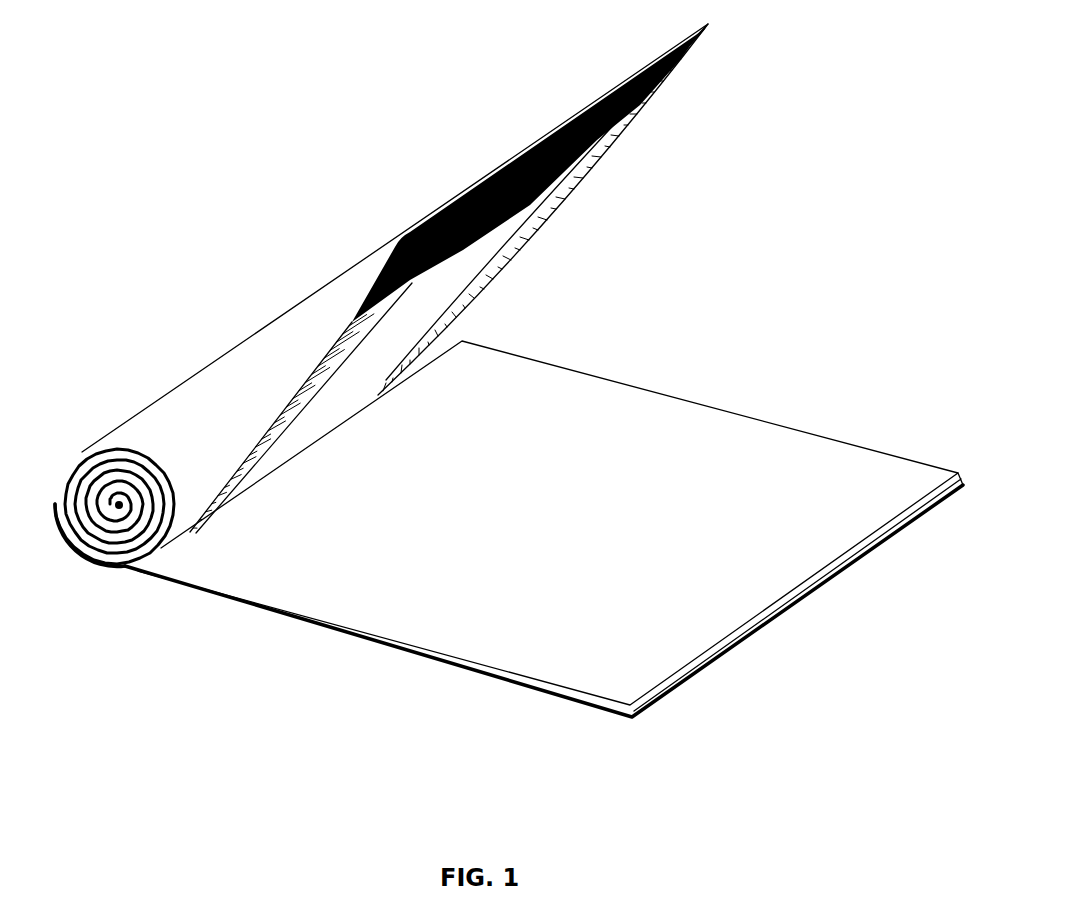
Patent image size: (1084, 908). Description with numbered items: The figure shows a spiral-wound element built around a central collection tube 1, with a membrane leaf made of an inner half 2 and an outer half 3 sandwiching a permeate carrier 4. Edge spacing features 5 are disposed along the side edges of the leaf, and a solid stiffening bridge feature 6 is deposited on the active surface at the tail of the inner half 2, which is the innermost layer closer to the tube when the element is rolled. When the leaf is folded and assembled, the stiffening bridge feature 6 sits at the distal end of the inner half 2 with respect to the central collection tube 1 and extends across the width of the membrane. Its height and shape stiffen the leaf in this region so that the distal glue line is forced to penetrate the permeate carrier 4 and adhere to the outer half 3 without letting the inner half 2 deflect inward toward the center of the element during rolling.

The central collection tube 1 is at (105, 446).
The inner half of membrane leaf 2 is at (366, 372).
The outer half of membrane leaf 3 is at (458, 593).
The permeate carrier 4 is at (667, 692).
The edge spacing features 5 is at (370, 320).
The stiffening bridge feature 6 is at (655, 90).